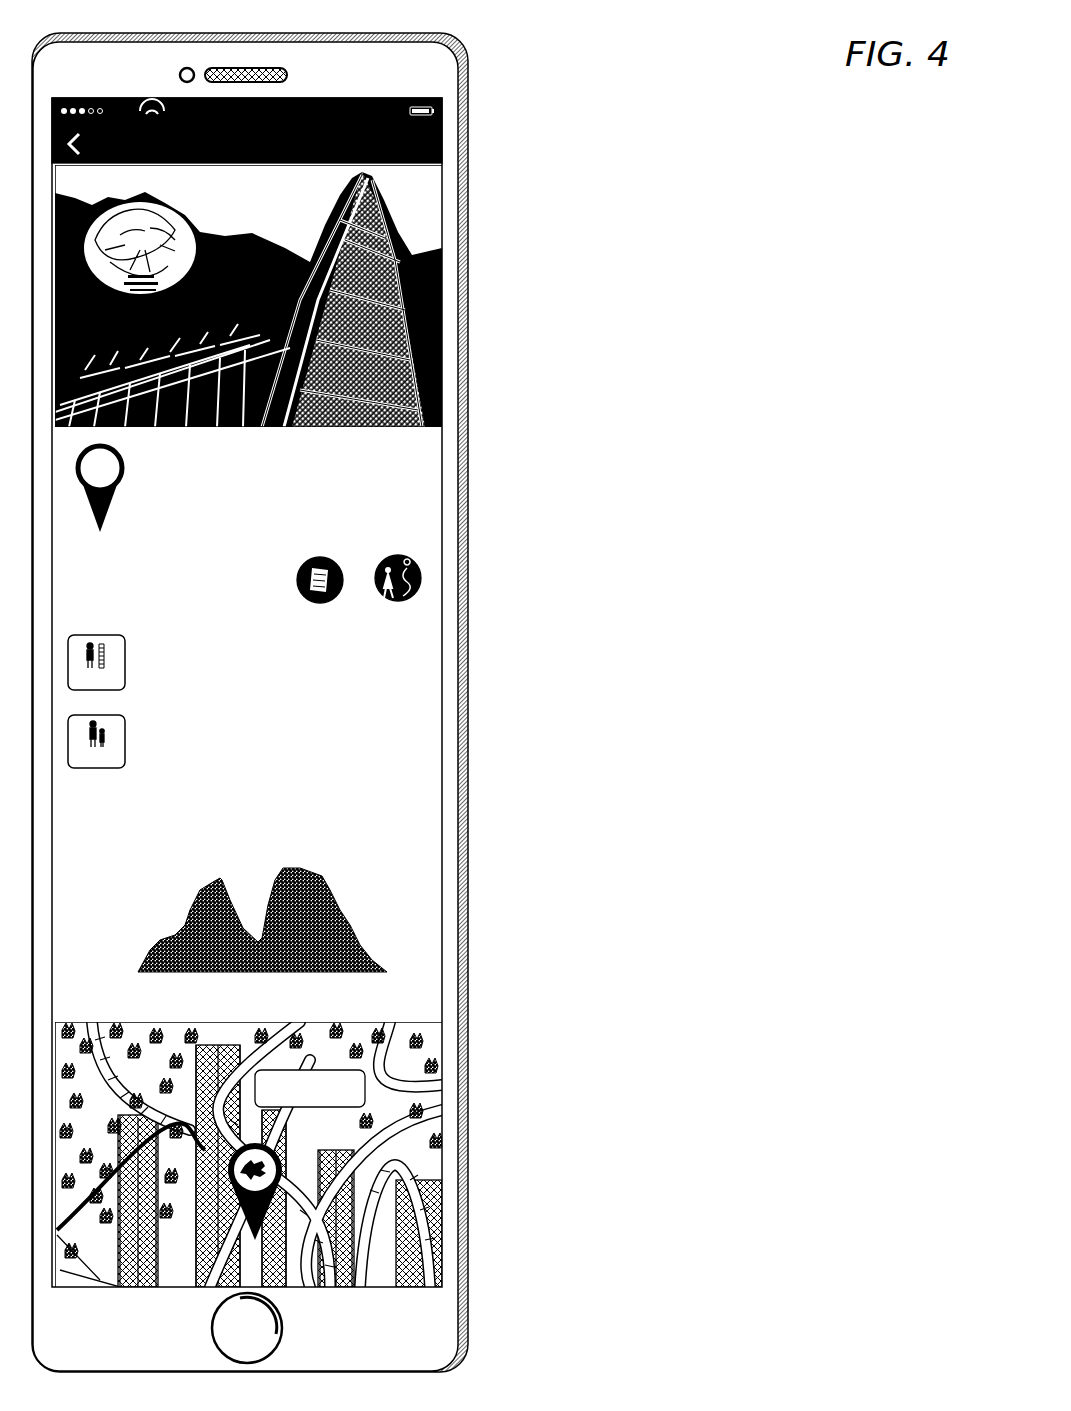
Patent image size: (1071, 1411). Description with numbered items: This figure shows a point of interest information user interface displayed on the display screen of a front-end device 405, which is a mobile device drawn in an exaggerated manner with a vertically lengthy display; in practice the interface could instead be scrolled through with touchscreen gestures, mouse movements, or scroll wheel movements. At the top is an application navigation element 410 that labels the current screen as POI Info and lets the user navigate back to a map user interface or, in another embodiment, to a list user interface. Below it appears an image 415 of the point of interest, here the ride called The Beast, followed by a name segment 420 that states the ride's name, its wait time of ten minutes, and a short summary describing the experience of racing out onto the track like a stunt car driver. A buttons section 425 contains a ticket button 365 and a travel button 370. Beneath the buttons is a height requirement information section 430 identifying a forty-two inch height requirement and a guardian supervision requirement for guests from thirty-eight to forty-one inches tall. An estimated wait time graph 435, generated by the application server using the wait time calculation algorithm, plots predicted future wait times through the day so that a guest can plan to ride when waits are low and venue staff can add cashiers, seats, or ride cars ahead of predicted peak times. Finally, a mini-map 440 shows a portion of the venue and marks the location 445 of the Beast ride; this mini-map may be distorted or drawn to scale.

The front-end device 405 is at (433, 72).
The application navigation element 410 is at (475, 128).
The image 415 is at (475, 425).
The name segment 420 is at (475, 430).
The buttons section 425 is at (490, 587).
The ticket button 365 is at (300, 580).
The travel button 370 is at (404, 588).
The height requirement information section 430 is at (475, 637).
The estimated wait time graph 435 is at (475, 820).
The mini-map 440 is at (332, 1154).
The location 445 is at (227, 1193).